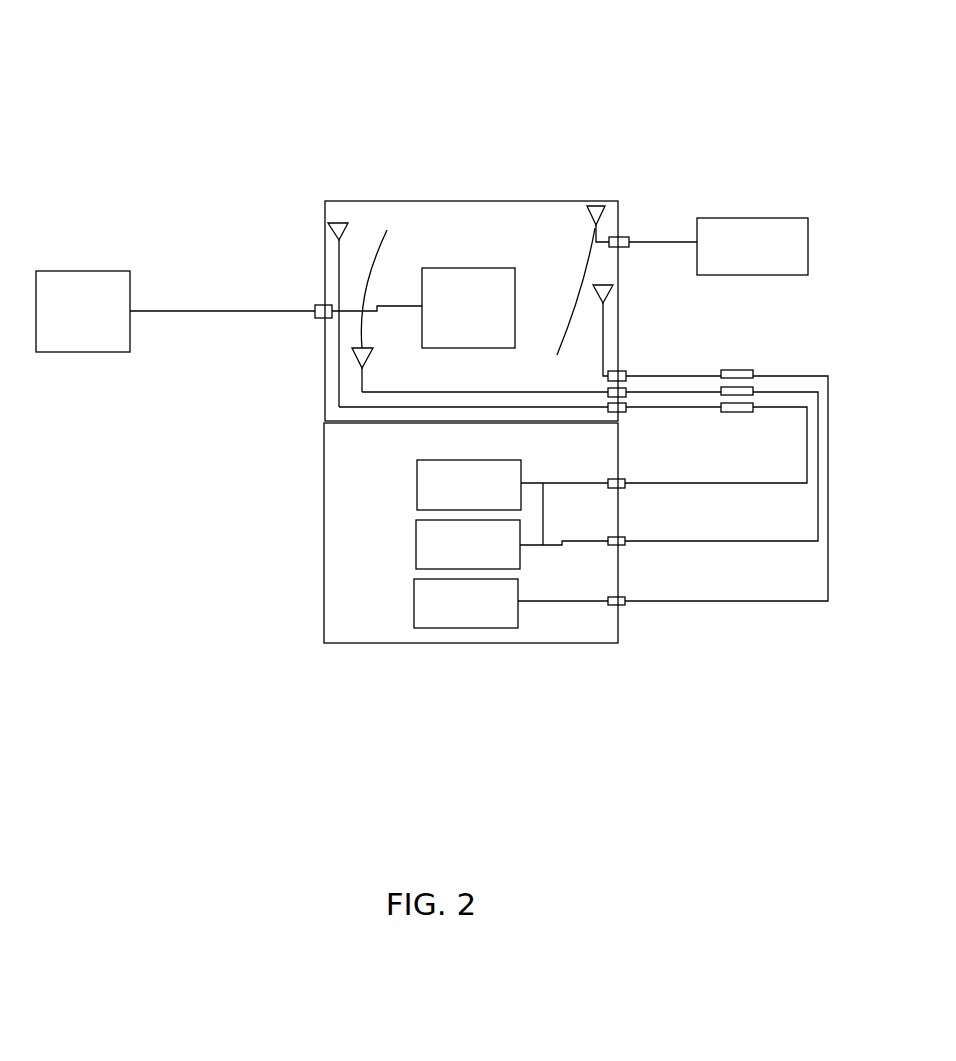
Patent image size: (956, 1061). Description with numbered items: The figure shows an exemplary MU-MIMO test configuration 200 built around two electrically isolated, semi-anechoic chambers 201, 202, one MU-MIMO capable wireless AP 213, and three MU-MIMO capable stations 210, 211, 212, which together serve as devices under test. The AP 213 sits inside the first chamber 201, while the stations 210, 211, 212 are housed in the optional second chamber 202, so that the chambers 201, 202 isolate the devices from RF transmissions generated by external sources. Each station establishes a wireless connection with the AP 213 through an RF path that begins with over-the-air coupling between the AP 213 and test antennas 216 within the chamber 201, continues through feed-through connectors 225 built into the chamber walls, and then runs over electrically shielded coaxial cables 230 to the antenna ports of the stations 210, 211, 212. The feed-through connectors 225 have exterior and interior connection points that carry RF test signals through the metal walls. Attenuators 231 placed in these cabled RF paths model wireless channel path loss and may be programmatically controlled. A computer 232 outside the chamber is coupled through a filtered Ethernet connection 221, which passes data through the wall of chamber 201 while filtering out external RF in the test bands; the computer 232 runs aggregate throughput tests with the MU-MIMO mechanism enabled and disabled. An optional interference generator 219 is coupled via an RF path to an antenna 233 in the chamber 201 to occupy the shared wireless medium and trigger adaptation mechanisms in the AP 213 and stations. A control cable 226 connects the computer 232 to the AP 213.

The test configuration 200 is at (437, 68).
The semi-anechoic chamber 201 is at (432, 200).
The semi-anechoic chamber 202 is at (322, 518).
The MU-MIMO station 210 is at (417, 480).
The MU-MIMO station 211 is at (416, 536).
The MU-MIMO station 212 is at (414, 595).
The wireless AP 213 is at (462, 268).
The test antenna 216 is at (347, 231).
The interference generator 219 is at (756, 218).
The filtered Ethernet connection 221 is at (315, 306).
The feed-through connector 225 is at (615, 237).
The control cable 226 is at (230, 310).
The coaxial cable 230 is at (652, 242).
The attenuator 231 is at (748, 403).
The computer 232 is at (108, 270).
The antenna 233 is at (597, 204).